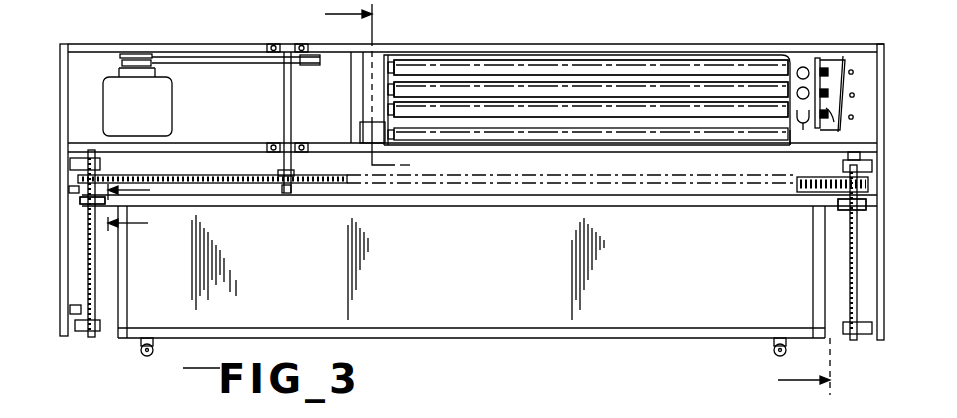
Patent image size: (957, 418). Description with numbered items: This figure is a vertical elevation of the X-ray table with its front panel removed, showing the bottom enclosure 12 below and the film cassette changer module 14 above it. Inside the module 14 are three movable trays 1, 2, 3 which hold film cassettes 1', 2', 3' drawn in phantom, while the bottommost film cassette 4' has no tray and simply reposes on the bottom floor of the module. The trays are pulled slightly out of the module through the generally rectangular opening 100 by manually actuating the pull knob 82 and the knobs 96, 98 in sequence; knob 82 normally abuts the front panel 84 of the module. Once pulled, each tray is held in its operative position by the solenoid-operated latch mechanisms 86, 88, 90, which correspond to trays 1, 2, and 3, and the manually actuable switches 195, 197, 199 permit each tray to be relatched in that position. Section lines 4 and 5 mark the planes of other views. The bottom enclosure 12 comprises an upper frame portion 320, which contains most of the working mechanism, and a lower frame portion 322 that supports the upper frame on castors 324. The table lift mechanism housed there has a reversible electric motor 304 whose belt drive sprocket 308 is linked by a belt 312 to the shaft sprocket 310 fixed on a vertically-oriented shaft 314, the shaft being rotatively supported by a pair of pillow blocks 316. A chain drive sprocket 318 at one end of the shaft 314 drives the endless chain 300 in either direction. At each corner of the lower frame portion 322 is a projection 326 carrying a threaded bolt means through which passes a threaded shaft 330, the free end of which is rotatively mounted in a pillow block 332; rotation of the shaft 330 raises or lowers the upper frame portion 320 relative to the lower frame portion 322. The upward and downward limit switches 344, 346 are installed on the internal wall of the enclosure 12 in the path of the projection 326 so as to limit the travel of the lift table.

The bottom enclosure 12 is at (95, 43).
The film cassette changer module 14 is at (720, 50).
The movable tray 1 is at (588, 45).
The movable tray 2 is at (588, 57).
The movable tray 3 is at (588, 67).
The film cassette 1' is at (591, 45).
The film cassette 2' is at (591, 56).
The film cassette 3' is at (591, 66).
The film cassette 4' is at (588, 78).
The pull knob 82 is at (803, 66).
The front panel 84 is at (858, 52).
The solenoid-operated latch mechanism 86 is at (820, 66).
The solenoid-operated latch mechanism 88 is at (827, 64).
The solenoid-operated latch mechanism 90 is at (832, 112).
The knob 96 is at (799, 90).
The knob 98 is at (804, 129).
The opening 100 is at (790, 140).
The switch 195 is at (853, 71).
The switch 197 is at (869, 86).
The switch 199 is at (867, 109).
The endless chain 300 is at (190, 180).
The motor 304 is at (157, 112).
The belt drive sprocket 308 is at (121, 59).
The shaft sprocket 310 is at (303, 66).
The belt 312 is at (205, 64).
The vertically-oriented shaft 314 is at (293, 116).
The pillow block 316 is at (287, 44).
The chain drive sprocket 318 is at (293, 172).
The upper frame portion 320 is at (520, 152).
The lower frame portion 322 is at (500, 207).
The castor 324 is at (157, 350).
The projection 326 is at (100, 208).
The threaded shaft 330 is at (96, 297).
The pillow block 332 is at (76, 156).
The upward limit switch 344 is at (72, 310).
The downward limit switch 346 is at (71, 190).
The section line 4 is at (129, 201).
The section line 5 is at (586, 199).